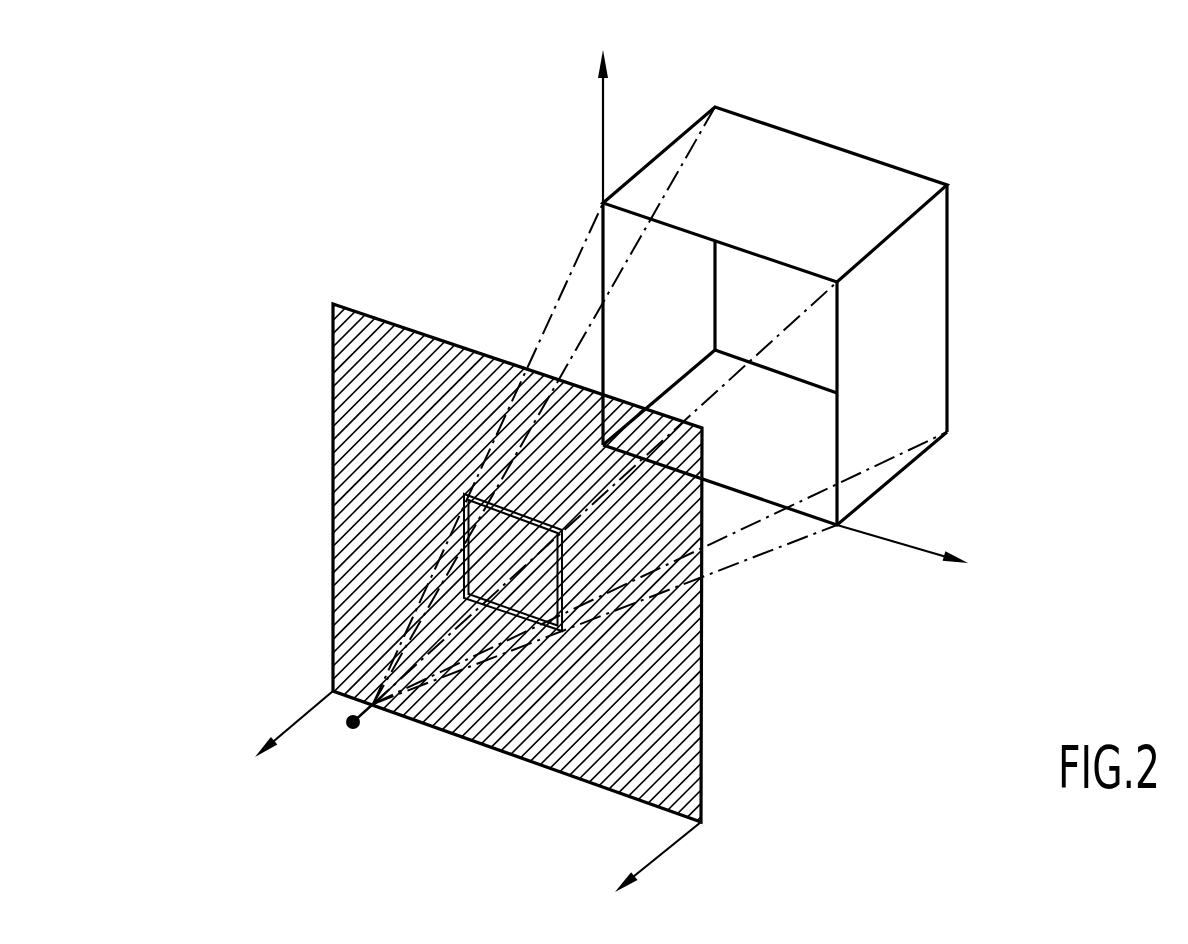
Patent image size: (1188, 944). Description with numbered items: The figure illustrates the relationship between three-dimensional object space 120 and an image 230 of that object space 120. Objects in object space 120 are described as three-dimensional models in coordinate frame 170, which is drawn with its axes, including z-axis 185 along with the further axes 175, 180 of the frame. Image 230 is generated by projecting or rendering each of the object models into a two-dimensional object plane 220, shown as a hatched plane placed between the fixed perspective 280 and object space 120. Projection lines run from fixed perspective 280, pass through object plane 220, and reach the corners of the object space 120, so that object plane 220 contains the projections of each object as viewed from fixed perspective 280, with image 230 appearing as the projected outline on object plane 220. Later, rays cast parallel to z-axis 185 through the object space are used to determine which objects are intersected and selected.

The three-dimensional object space 120 is at (927, 268).
The coordinate frame 170 is at (445, 255).
The X axis 175 is at (900, 540).
The Y axis 180 is at (602, 132).
The z-axis 185 is at (290, 722).
The two-dimensional object plane 220 is at (330, 518).
The image of object space 230 is at (560, 583).
The fixed perspective 280 is at (357, 727).